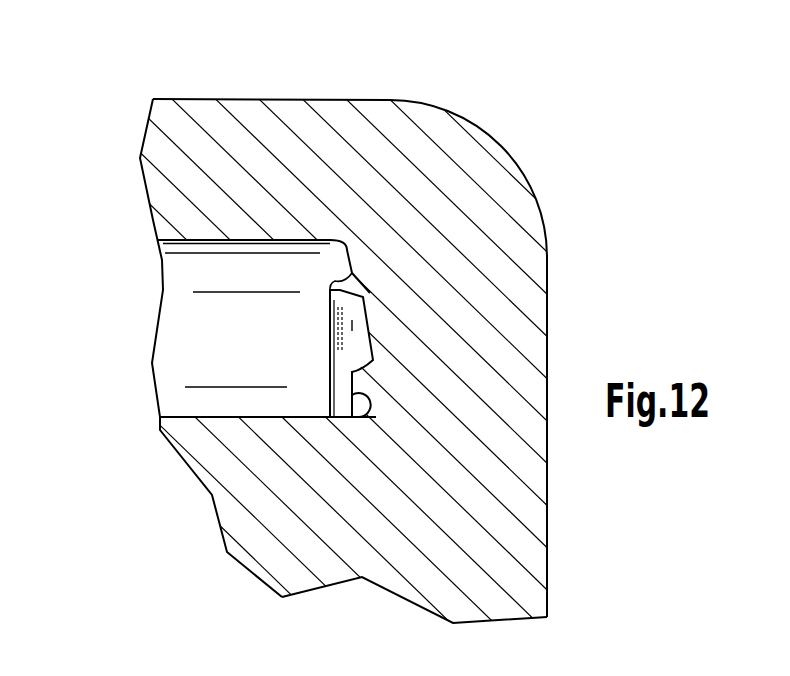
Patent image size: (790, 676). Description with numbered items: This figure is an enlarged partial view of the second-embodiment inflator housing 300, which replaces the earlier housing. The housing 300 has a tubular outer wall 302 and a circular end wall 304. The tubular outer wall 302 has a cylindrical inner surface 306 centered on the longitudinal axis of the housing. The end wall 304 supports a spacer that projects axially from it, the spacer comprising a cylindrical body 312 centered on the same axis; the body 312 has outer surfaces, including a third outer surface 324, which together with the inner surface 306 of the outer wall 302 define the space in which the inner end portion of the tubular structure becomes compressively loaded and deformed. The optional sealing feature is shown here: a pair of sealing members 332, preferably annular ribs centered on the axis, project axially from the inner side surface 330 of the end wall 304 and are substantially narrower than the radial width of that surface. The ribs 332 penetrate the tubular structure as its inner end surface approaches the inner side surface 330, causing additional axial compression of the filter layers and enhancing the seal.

The housing 300 is at (200, 98).
The tubular outer wall 302 is at (168, 157).
The end wall 304 is at (502, 395).
The cylindrical inner surface 306 is at (200, 243).
The cylindrical body 312 is at (220, 460).
The third outer surface 324 is at (213, 415).
The inner side surface 330 is at (357, 417).
The sealing members 332 is at (352, 373).